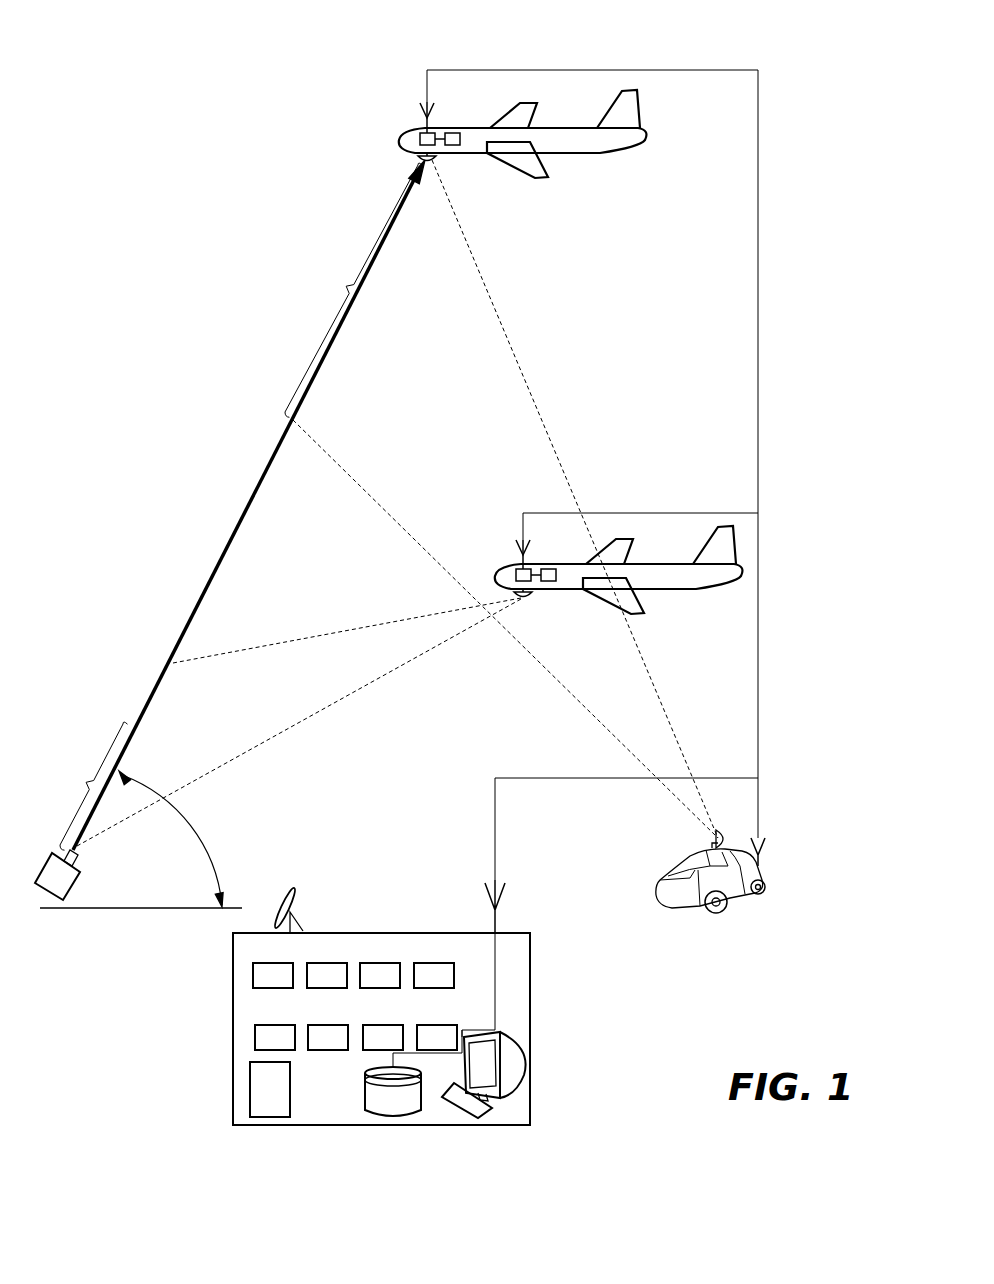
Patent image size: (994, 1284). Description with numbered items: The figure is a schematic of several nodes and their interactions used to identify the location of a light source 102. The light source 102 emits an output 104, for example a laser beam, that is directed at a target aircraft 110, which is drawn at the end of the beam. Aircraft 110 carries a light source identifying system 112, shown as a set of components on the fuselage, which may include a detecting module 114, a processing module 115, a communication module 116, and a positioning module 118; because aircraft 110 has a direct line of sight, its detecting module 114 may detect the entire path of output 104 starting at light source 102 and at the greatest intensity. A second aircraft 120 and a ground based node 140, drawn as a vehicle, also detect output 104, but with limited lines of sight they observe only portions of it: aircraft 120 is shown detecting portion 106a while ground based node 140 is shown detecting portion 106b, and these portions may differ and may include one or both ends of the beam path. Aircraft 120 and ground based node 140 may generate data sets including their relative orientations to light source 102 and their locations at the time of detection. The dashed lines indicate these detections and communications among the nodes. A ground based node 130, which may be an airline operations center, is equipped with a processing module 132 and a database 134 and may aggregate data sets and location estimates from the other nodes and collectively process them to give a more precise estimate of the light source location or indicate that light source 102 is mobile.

The light source 102 is at (56, 884).
The output 104 is at (243, 520).
The portion 106a is at (81, 786).
The portion 106b is at (350, 290).
The aircraft 110 is at (594, 182).
The light source identifying system 112 is at (401, 126).
The detecting module 114 is at (422, 158).
The processing module 115 is at (420, 139).
The communication module 116 is at (420, 105).
The positioning module 118 is at (455, 147).
The aircraft 120 is at (690, 584).
The ground based node 130 is at (431, 1020).
The processing module 132 is at (526, 1080).
The database 134 is at (427, 1112).
The ground based node 140 is at (742, 896).